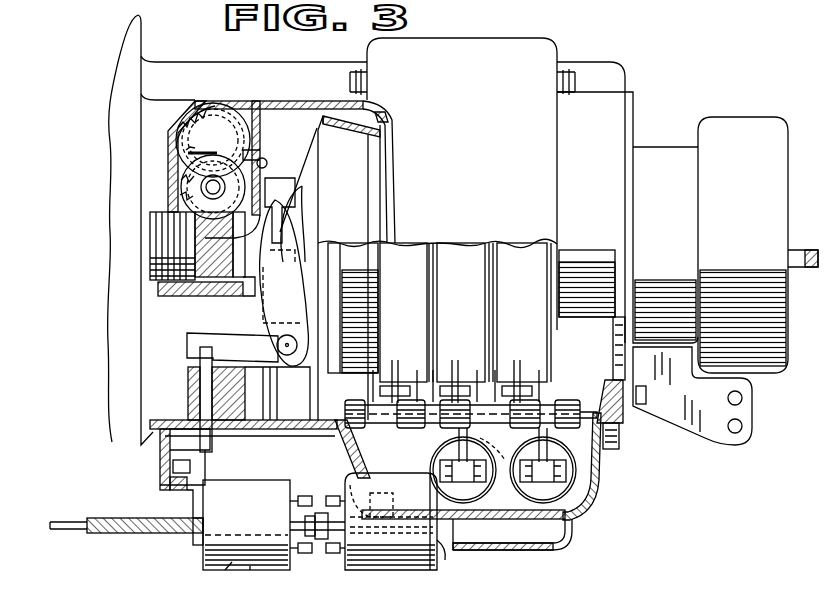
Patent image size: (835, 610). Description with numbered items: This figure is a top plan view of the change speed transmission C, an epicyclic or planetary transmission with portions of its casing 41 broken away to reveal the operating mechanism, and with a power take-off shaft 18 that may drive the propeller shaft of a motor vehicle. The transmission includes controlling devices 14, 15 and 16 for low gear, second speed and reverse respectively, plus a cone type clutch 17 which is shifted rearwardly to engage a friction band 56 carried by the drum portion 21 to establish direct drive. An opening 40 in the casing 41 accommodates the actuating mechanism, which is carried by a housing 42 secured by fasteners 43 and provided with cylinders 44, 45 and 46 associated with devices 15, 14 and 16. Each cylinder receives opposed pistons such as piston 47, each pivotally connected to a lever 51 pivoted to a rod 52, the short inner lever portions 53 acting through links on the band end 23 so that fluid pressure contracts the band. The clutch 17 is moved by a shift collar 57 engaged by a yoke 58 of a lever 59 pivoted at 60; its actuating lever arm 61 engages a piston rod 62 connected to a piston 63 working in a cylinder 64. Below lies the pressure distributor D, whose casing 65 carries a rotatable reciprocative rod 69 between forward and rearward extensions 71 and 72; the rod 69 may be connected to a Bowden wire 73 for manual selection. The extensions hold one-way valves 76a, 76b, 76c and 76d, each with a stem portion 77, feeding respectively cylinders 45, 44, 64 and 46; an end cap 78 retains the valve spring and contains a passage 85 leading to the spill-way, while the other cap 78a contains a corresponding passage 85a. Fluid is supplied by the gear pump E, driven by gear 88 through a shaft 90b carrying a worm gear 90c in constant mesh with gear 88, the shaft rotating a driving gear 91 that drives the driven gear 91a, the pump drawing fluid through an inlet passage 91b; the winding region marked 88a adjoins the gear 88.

The casing 41 is at (472, 42).
The change speed transmission C is at (588, 64).
The power take-off shaft 18 is at (788, 238).
The opening 40 is at (603, 410).
The fasteners 43 is at (612, 450).
The cylinder 46 is at (596, 482).
The pivot 60 is at (353, 308).
The controlling device 15 is at (405, 258).
The controlling device 14 is at (452, 262).
The controlling device 16 is at (510, 255).
The lever portions 53 is at (398, 385).
The band end 23 is at (520, 385).
The rod 52 is at (345, 412).
The piston 47 is at (472, 503).
The housing 42 is at (572, 530).
The cylinder 44 is at (463, 464).
The passage 85a is at (463, 480).
The cylinder 45 is at (543, 465).
The lever 51 is at (496, 444).
The friction band 56 is at (322, 101).
The drum portion 21 is at (372, 112).
The clutch 17 is at (361, 166).
The driving gear 91 is at (213, 185).
The shaft 90b is at (198, 205).
The worm gear 90c is at (203, 188).
The pump E is at (190, 153).
The driven gear 91a is at (218, 108).
The inlet passage 91b is at (260, 148).
The motor winding 88a is at (160, 246).
The gear 88 is at (192, 296).
The shift collar 57 is at (292, 178).
The yoke 58 is at (284, 222).
The lever 59 is at (275, 247).
The actuating lever arm 61 is at (188, 340).
The piston rod 62 is at (200, 376).
The piston 63 is at (172, 466).
The cylinder 64 is at (170, 482).
The passage 85 is at (192, 498).
The Bowden wire 73 is at (57, 532).
The end cap 78 is at (197, 545).
The rod 69 is at (297, 517).
The pressure distributor mechanism D is at (220, 578).
The forward extension 71 is at (252, 566).
The one-way valve 76d is at (302, 496).
The one-way valve 76a is at (334, 496).
The one-way valve 76b is at (303, 553).
The one-way valve 76c is at (342, 548).
The stem portion 77 is at (335, 555).
The casing 65 is at (372, 563).
The rearward extension 72 is at (425, 565).
The end cap 78a is at (440, 560).